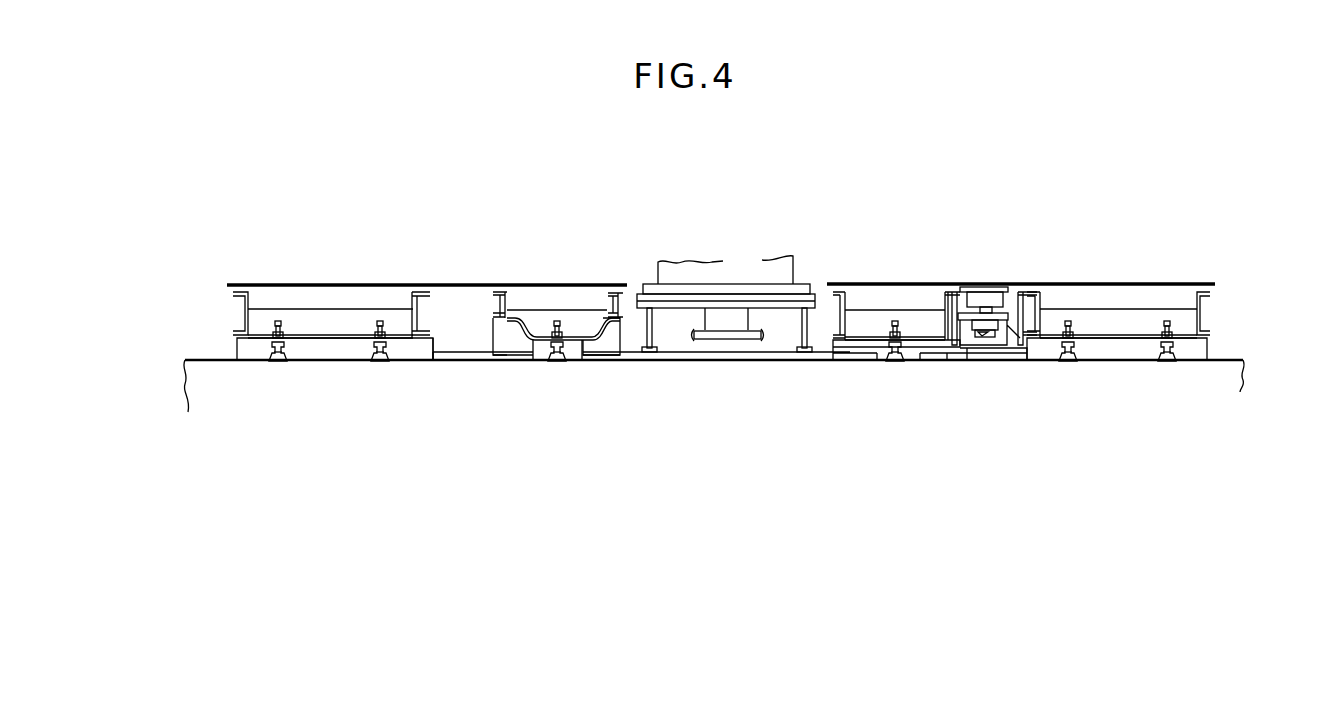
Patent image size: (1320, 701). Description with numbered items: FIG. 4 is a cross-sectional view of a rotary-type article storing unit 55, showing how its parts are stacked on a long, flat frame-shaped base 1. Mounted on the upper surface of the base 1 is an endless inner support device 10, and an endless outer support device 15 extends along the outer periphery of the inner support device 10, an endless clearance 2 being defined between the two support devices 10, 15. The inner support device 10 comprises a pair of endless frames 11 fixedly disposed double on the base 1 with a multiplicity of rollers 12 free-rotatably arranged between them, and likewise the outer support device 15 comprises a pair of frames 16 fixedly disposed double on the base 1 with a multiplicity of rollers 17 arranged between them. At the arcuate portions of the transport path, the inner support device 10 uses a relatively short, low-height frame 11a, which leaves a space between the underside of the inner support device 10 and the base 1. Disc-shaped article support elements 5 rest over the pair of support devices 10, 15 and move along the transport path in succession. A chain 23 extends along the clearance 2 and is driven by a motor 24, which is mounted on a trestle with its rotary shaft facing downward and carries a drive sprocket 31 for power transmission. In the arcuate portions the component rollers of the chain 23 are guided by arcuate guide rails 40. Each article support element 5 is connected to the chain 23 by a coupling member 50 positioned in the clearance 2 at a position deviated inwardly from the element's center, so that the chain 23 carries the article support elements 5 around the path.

The base 1 is at (855, 344).
The clearance 2 is at (455, 300).
The article support element 5 is at (290, 283).
The inner support device 10 is at (490, 302).
The frame 11 is at (942, 313).
The low-height frame 11a is at (603, 322).
The roller 12 is at (558, 283).
The outer support device 15 is at (237, 310).
The frame 16 is at (240, 330).
The roller 17 is at (373, 283).
The chain 23 is at (975, 337).
The motor 24 is at (700, 274).
The drive sprocket 31 is at (727, 340).
The arcuate guide rail 40 is at (963, 345).
The coupling member 50 is at (980, 302).
The article storing unit 55 is at (1226, 242).